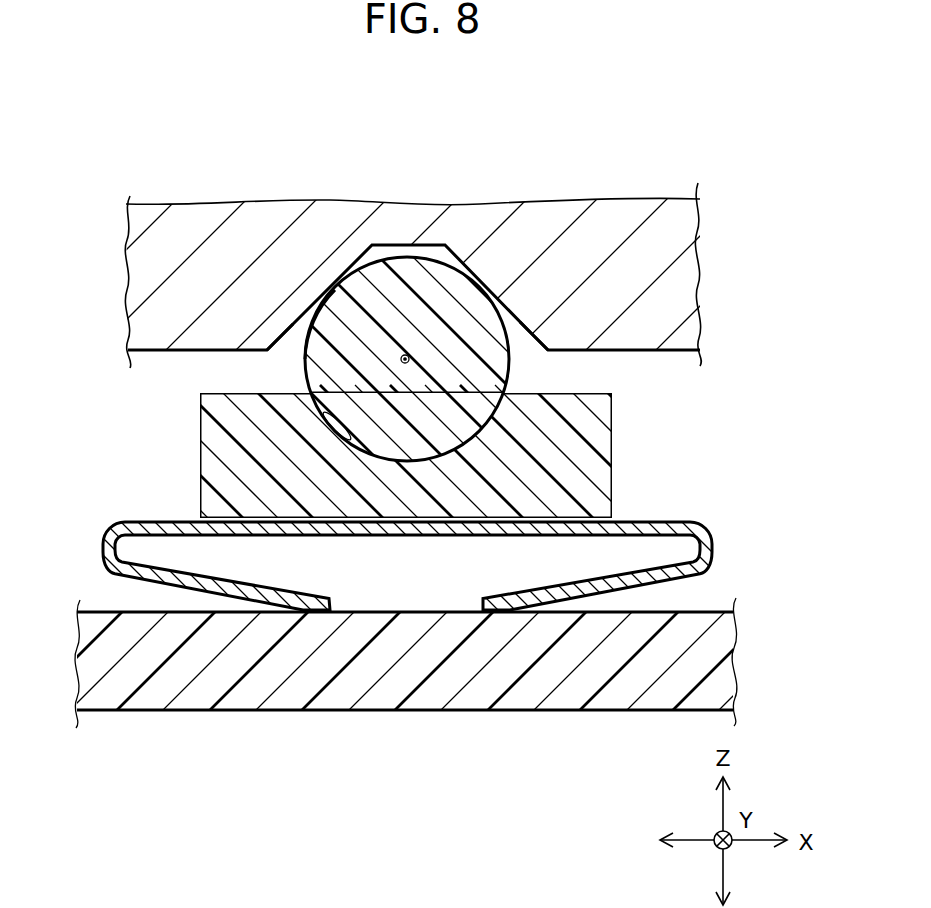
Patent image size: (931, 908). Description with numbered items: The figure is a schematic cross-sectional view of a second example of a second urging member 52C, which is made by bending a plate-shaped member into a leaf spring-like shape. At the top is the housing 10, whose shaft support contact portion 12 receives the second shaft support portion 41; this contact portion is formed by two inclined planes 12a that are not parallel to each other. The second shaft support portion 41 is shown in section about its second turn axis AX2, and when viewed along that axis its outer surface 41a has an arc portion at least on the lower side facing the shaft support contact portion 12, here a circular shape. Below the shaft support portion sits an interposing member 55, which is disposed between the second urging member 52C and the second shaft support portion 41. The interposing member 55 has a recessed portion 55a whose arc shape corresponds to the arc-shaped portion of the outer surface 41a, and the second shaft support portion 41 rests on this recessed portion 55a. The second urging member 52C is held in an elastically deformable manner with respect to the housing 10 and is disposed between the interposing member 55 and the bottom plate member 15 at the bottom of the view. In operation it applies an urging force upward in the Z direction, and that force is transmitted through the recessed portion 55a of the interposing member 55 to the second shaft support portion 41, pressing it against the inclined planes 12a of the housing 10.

The housing 10 is at (688, 252).
The shaft support contact portion 12 is at (488, 274).
The inclined planes 12a is at (293, 336).
The second shaft support portion 41 is at (422, 312).
The outer surface 41a is at (303, 357).
The second turn axis AX2 is at (401, 358).
The interposing member 55 is at (596, 452).
The recessed portion 55a is at (323, 416).
The second urging member 52C is at (702, 525).
The bottom plate member 15 is at (715, 682).